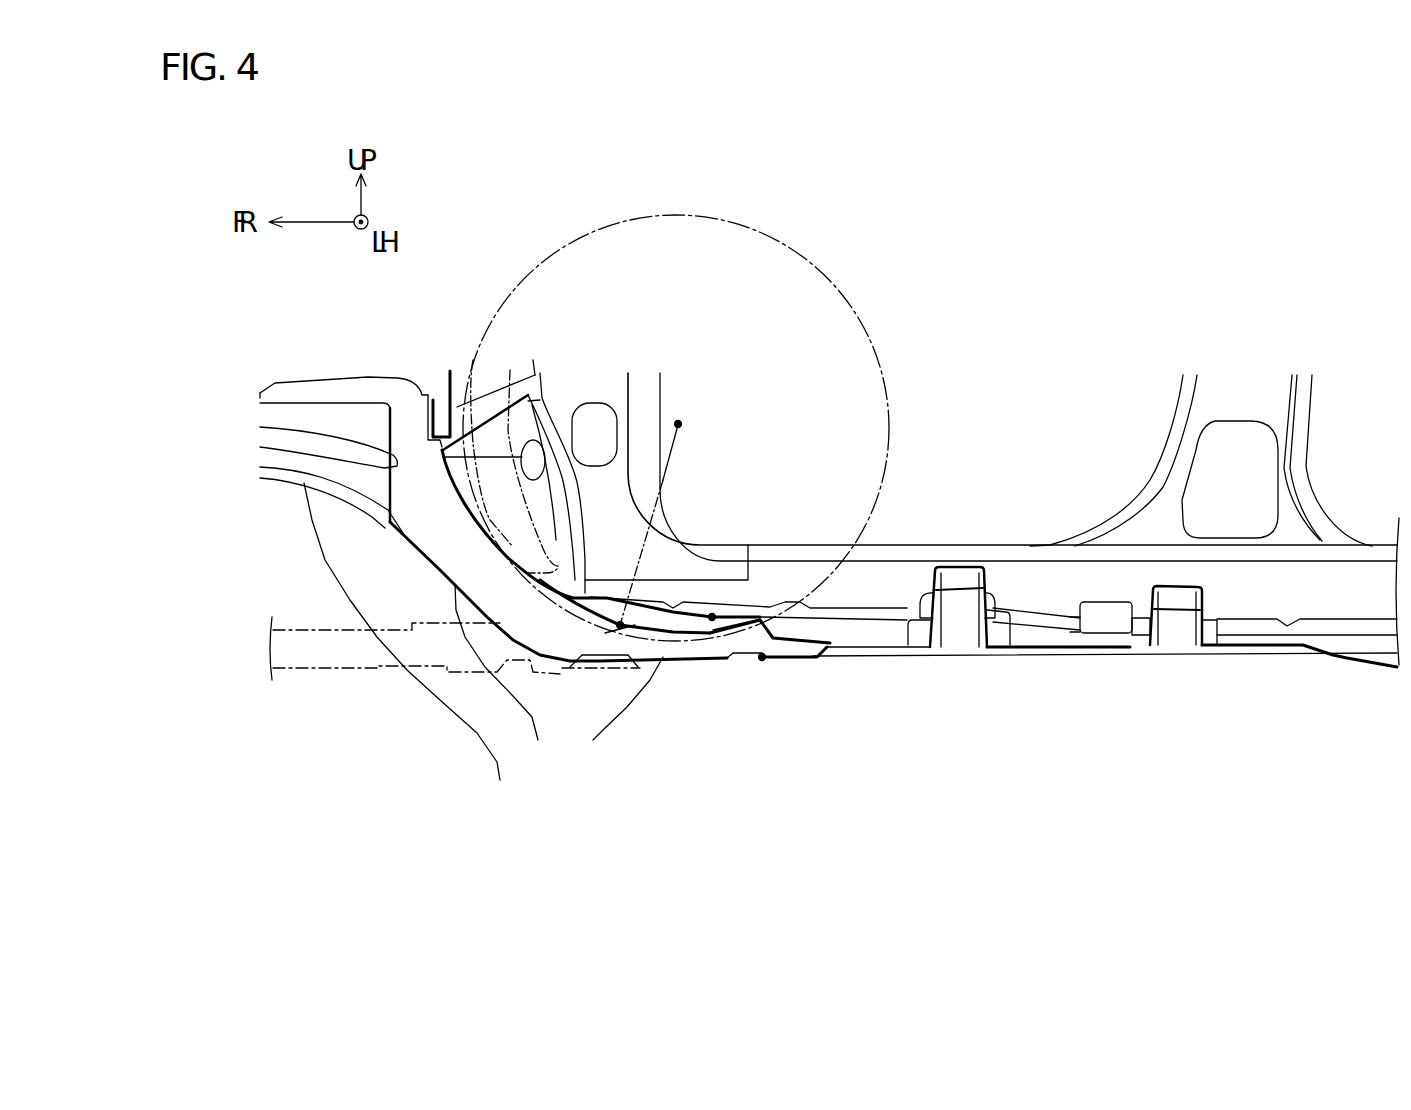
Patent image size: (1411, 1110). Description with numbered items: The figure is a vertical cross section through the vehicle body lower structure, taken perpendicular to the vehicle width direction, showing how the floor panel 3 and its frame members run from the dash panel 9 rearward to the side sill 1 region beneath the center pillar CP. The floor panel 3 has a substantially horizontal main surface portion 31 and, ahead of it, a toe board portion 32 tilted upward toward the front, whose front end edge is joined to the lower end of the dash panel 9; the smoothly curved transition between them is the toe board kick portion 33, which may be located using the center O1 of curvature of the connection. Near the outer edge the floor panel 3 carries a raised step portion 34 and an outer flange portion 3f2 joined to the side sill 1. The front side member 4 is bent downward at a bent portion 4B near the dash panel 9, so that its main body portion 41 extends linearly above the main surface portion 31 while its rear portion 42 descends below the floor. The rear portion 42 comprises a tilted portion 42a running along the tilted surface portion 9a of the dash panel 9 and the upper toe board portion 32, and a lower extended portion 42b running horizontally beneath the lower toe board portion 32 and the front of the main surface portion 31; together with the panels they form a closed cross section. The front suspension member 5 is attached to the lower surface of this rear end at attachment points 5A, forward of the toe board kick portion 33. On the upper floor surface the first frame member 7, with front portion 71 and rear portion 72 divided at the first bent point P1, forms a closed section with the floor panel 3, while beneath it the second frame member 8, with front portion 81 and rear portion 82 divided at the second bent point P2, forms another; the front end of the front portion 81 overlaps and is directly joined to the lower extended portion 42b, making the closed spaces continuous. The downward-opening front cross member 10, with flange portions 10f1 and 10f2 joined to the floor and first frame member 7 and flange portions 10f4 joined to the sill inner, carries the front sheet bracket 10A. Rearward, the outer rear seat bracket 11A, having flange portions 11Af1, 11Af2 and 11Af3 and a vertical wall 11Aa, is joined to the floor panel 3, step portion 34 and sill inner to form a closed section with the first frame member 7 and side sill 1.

The side sill 1 is at (1010, 543).
The floor panel 3 is at (1315, 645).
The main surface portion 31 is at (848, 632).
The toe board portion 32 is at (593, 596).
The toe board kick portion 33 is at (613, 648).
The step portion 34 is at (1353, 632).
The outer flange portion 3f2 is at (1377, 628).
The front side member 4 is at (573, 812).
The main body portion 41 is at (406, 649).
The rear portion 42 is at (613, 762).
The tilted portion 42a is at (505, 676).
The lower extended portion 42b is at (618, 712).
The bent portion 4B is at (377, 354).
The front suspension member 5 is at (333, 672).
The attachment point 5A is at (603, 660).
The first frame member 7 is at (808, 458).
The front portion 71 is at (648, 604).
The rear portion 72 is at (833, 615).
The second frame member 8 is at (817, 757).
The front portion 81 is at (745, 650).
The rear portion 82 is at (783, 650).
The dash panel 9 is at (533, 382).
The tilted surface portion 9a is at (480, 517).
The front cross member 10 is at (962, 580).
The front sheet bracket 10A is at (933, 563).
The flange portion 10f1 is at (907, 618).
The flange portion 10f2 is at (992, 622).
The flange portion 10f4 is at (920, 600).
The outer rear seat bracket 11A is at (1182, 598).
The vertical wall 11Aa is at (1172, 635).
The flange portion 11Af1 is at (1128, 638).
The flange portion 11Af2 is at (1222, 645).
The flange portion 11Af3 is at (1147, 623).
The center pillar CP is at (1313, 400).
The center of curvature O1 is at (666, 515).
The first bent point P1 is at (713, 612).
The second bent point P2 is at (762, 661).